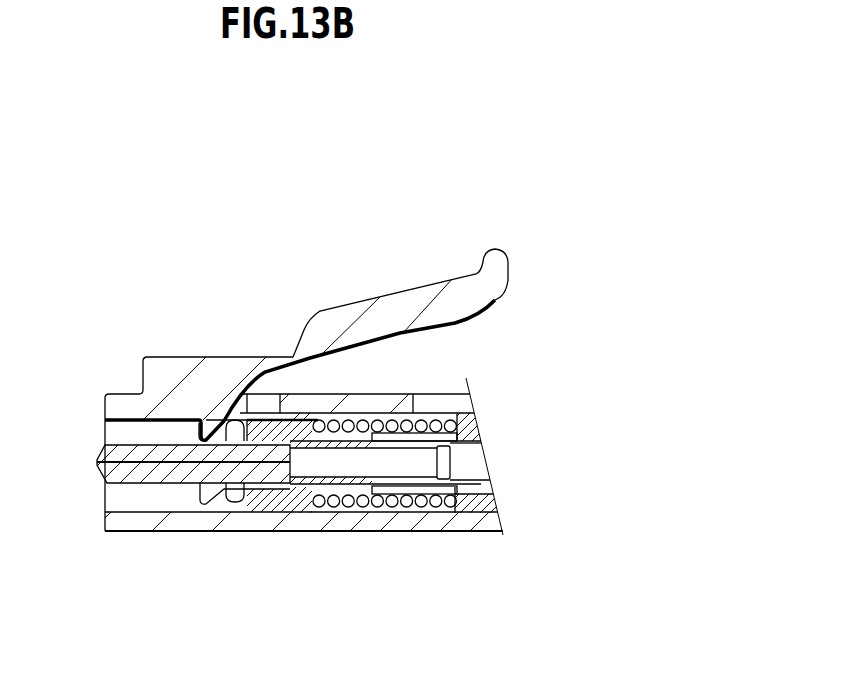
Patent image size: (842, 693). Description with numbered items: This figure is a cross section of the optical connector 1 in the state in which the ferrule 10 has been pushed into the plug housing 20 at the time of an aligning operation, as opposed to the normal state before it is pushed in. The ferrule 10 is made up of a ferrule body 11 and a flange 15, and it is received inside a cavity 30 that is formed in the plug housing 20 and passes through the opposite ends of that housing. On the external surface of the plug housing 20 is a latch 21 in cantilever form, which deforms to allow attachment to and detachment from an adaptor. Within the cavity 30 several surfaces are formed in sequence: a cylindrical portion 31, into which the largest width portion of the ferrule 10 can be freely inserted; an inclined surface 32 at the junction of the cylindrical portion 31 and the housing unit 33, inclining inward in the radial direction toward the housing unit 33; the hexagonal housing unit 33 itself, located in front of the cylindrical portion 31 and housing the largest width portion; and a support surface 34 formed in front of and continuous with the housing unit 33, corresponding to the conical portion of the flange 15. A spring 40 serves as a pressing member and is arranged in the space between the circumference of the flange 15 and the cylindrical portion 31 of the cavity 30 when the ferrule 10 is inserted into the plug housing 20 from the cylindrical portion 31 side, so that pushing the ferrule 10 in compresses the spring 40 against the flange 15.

The optical connector 1 is at (368, 215).
The ferrule 10 is at (265, 587).
The ferrule body 11 is at (153, 512).
The flange 15 is at (260, 518).
The plug housing 20 is at (436, 518).
The latch 21 is at (412, 303).
The cavity 30 is at (312, 292).
The cylindrical portion 31 is at (283, 420).
The inclined surface 32 is at (255, 420).
The housing unit 33 is at (224, 422).
The support surface 34 is at (200, 437).
The spring 40 is at (360, 514).